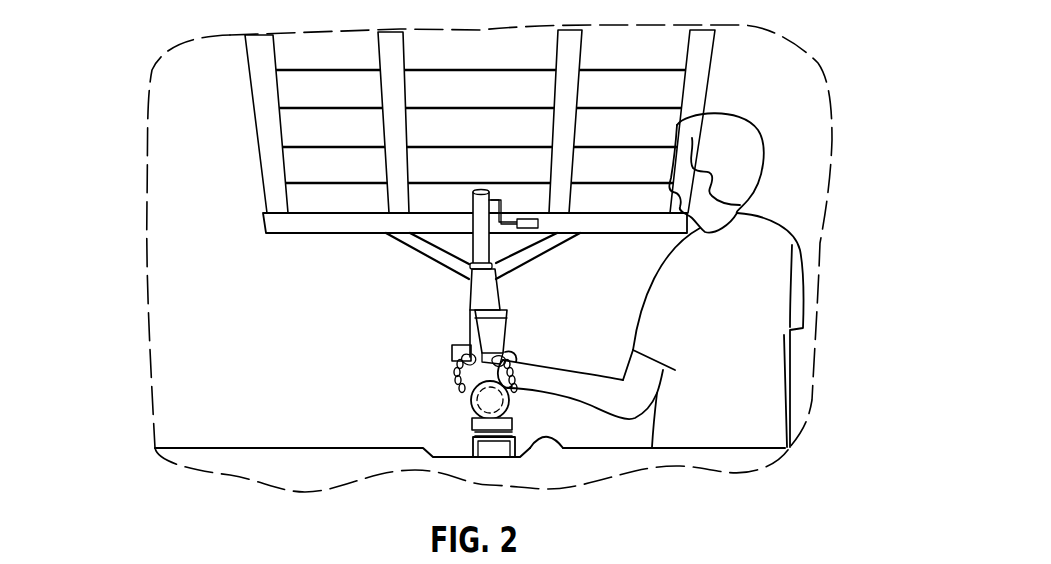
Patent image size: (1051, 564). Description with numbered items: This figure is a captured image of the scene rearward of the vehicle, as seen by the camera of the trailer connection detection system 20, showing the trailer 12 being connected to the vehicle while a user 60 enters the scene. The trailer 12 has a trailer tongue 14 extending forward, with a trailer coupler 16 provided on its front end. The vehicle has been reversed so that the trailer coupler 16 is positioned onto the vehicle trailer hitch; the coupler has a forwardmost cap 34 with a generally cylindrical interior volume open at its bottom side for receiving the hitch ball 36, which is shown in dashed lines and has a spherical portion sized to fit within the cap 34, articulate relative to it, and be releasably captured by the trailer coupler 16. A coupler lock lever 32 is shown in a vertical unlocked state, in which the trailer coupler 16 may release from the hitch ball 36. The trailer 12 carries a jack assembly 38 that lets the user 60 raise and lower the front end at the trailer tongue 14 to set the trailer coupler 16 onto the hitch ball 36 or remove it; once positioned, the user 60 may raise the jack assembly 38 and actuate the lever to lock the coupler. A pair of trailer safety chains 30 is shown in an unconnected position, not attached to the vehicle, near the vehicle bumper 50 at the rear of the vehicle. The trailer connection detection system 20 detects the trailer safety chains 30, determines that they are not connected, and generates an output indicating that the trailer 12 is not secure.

The trailer 12 is at (740, 88).
The trailer tongue 14 is at (480, 295).
The trailer coupler 16 is at (505, 352).
The trailer connection detection system 20 is at (420, 325).
The trailer safety chains 30 is at (472, 395).
The coupler lock lever 32 is at (452, 355).
The cap 34 is at (513, 402).
The hitch ball 36 is at (470, 407).
The jack assembly 38 is at (480, 205).
The vehicle bumper 50 is at (552, 440).
The user 60 is at (753, 260).